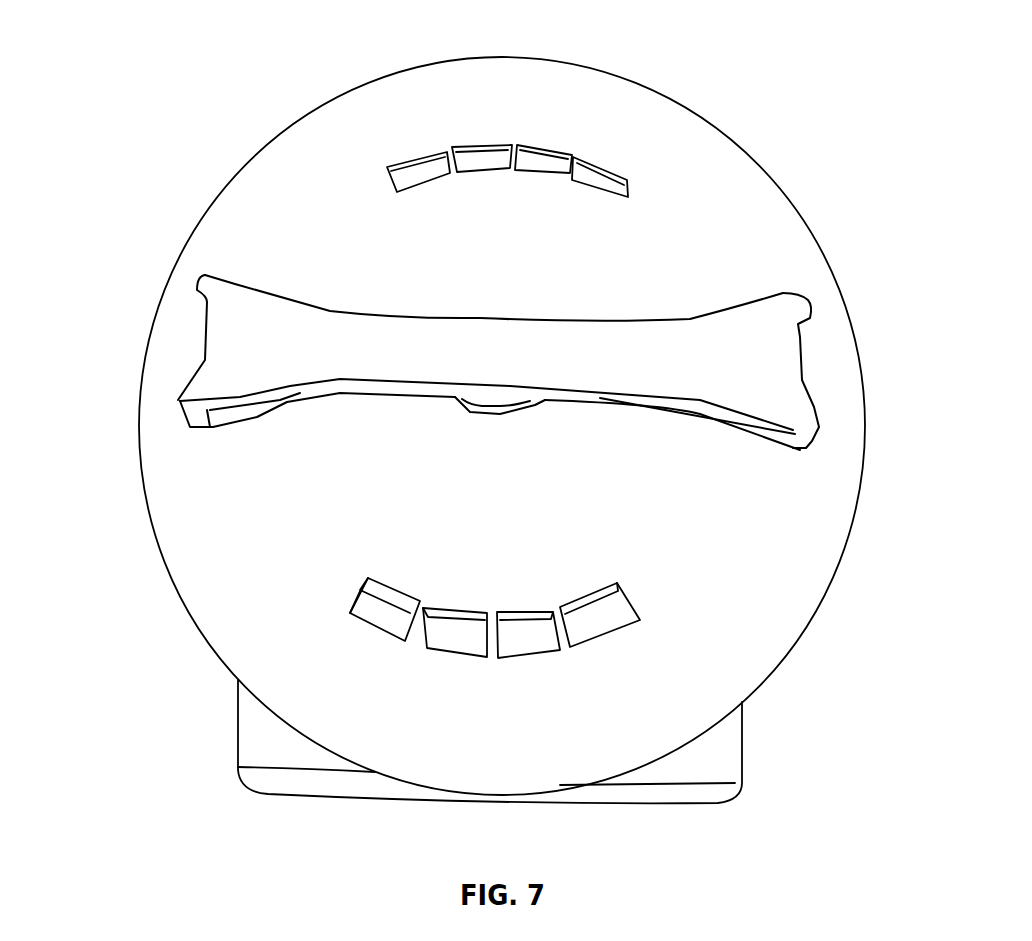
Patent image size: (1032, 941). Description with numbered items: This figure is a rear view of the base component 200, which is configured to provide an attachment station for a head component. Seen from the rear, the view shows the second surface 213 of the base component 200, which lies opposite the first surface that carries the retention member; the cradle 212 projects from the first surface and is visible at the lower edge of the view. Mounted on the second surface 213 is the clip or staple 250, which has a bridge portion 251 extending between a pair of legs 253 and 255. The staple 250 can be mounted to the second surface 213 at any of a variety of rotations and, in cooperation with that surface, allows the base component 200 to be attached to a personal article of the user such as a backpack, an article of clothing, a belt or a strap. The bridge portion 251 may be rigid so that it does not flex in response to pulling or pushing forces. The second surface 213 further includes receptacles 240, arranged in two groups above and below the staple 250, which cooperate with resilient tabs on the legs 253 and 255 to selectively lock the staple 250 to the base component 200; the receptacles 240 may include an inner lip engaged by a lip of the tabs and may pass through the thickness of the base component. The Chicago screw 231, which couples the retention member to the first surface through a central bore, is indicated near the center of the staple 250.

The base component 200 is at (243, 126).
The second surface 213 is at (697, 157).
The cradle 212 is at (742, 757).
The receptacles 240 is at (586, 115).
The staple 250 is at (172, 313).
The bridge portion 251 is at (657, 322).
The leg 253 is at (797, 449).
The leg 255 is at (182, 402).
The Chicago screw 231 is at (551, 417).